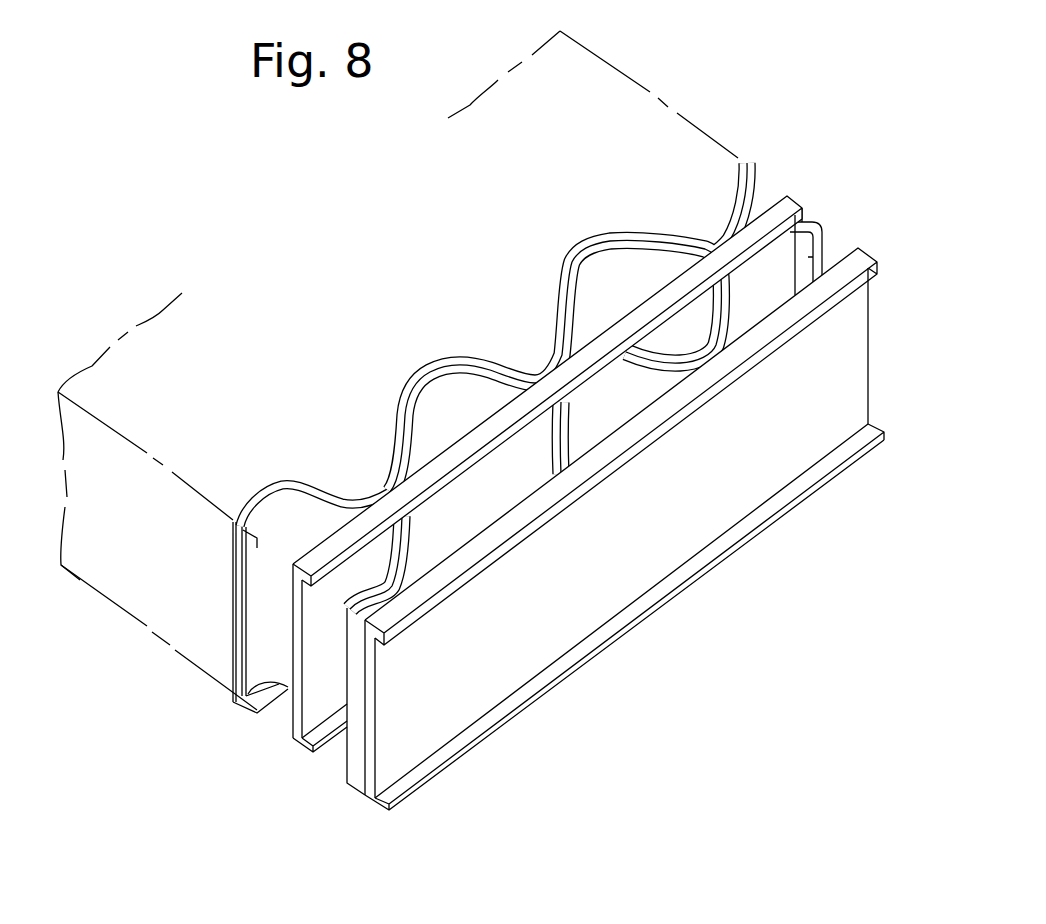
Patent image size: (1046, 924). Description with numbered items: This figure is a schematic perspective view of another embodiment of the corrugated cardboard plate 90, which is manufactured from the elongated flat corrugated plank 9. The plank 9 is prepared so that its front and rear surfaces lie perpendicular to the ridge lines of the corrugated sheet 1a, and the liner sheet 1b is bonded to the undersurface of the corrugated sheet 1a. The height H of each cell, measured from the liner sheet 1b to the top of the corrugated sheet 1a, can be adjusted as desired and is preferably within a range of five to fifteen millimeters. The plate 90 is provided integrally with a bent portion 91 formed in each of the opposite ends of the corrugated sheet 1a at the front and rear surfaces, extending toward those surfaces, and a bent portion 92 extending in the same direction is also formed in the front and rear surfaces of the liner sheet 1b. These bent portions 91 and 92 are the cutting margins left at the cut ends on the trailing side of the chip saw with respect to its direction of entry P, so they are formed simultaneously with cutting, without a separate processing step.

The corrugated cardboard plate 90 is at (712, 110).
The bent portion 91 is at (807, 220).
The bent portion 92 is at (558, 366).
The corrugated sheet 1a is at (820, 253).
The liner sheet 1b is at (853, 317).
The corrugated plank 9 is at (293, 658).
The direction of entry P is at (513, 240).
The height of the cell H is at (422, 378).